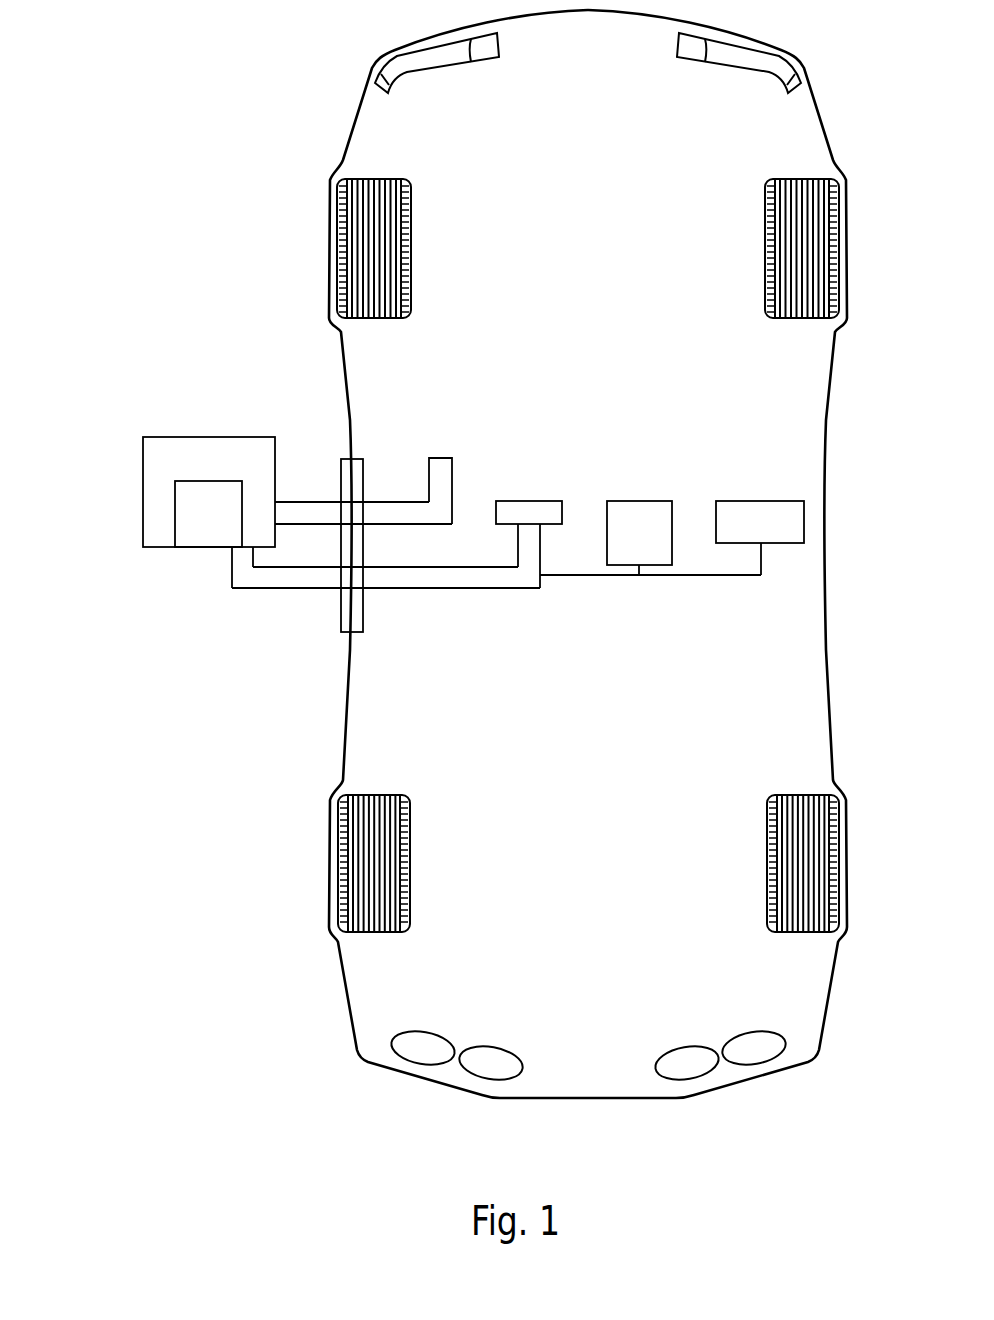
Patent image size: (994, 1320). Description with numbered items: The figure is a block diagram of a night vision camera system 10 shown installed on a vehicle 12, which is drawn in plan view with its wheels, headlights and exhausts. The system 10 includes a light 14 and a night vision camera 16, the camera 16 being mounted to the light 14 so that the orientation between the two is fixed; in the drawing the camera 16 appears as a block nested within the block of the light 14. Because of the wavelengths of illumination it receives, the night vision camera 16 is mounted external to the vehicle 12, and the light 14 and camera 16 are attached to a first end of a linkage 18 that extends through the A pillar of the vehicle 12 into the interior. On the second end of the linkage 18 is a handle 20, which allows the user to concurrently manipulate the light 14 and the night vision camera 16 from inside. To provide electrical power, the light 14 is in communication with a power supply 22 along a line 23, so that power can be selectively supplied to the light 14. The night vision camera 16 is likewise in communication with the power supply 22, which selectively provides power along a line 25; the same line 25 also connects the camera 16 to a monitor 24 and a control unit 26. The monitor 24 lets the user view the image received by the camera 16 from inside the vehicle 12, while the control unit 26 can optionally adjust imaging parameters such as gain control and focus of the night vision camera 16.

The night vision camera system 10 is at (180, 396).
The vehicle 12 is at (343, 394).
The light 14 is at (160, 437).
The night vision camera 16 is at (192, 515).
The linkage 18 is at (312, 515).
The handle 20 is at (437, 457).
The power supply 22 is at (517, 500).
The line 23 is at (247, 559).
The monitor 24 is at (623, 500).
The line 25 is at (263, 588).
The control unit 26 is at (735, 500).